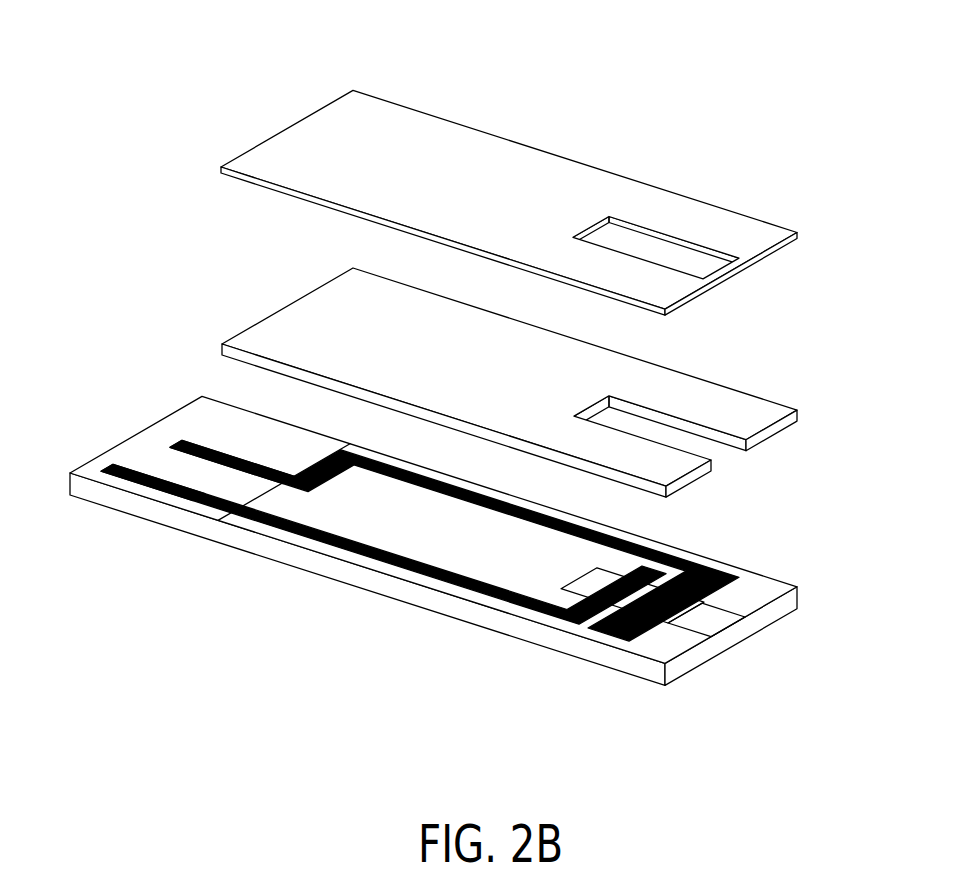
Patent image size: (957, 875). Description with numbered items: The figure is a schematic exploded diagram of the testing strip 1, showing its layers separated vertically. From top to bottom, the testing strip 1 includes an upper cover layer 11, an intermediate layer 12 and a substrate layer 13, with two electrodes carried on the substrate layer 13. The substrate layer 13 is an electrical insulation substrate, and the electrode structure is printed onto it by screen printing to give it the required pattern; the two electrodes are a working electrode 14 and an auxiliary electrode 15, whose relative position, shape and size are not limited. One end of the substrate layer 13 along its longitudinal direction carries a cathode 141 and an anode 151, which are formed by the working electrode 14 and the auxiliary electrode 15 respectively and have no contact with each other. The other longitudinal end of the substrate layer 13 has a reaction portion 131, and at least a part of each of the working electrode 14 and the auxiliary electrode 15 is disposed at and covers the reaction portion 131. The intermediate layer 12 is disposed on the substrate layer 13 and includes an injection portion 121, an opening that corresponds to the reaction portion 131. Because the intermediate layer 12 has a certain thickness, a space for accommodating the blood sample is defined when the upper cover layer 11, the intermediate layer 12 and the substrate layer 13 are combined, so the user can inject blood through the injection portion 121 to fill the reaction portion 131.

The testing strip 1 is at (450, 349).
The upper cover layer 11 is at (748, 235).
The intermediate layer 12 is at (537, 382).
The injection portion 121 is at (682, 435).
The substrate layer 13 is at (790, 603).
The reaction portion 131 is at (713, 617).
The working electrode 14 is at (439, 508).
The cathode 141 is at (177, 442).
The auxiliary electrode 15 is at (357, 540).
The anode 151 is at (112, 470).